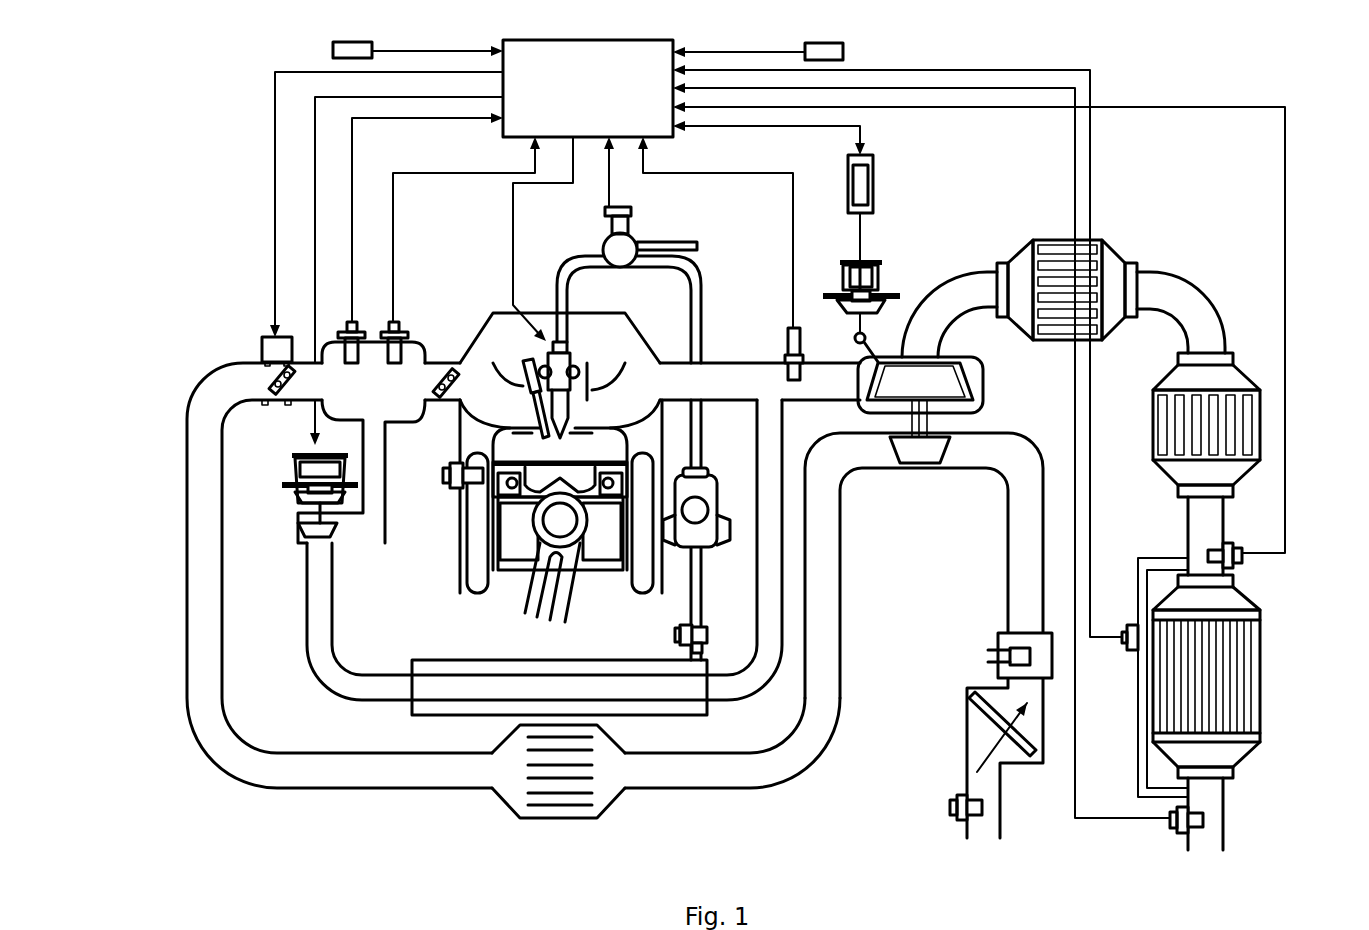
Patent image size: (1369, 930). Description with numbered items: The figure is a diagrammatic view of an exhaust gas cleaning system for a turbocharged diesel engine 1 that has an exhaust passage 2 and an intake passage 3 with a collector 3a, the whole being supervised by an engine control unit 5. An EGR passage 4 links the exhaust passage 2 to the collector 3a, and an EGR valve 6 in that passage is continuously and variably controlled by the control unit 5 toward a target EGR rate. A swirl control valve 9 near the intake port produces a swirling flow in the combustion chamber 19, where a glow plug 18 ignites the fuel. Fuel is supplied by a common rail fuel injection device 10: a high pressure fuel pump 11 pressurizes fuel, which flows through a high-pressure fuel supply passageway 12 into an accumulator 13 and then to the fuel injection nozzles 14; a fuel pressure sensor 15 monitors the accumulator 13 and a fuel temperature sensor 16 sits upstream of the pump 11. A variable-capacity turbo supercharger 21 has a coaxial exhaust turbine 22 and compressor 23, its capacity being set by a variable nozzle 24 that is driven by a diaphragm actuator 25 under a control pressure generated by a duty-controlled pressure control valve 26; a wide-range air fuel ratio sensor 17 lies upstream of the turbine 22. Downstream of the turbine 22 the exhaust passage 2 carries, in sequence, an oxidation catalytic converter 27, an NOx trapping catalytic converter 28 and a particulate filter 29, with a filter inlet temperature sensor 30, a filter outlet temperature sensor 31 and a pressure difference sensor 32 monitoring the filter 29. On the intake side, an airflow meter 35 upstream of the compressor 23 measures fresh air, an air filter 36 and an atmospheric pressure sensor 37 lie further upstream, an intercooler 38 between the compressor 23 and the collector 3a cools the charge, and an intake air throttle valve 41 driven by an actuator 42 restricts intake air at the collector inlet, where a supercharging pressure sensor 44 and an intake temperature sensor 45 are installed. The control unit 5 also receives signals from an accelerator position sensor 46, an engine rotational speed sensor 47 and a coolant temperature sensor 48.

The engine 1 is at (513, 467).
The exhaust passage 2 is at (722, 364).
The intake passage 3 is at (190, 582).
The collector 3a is at (328, 332).
The EGR passage 4 is at (328, 678).
The engine control unit 5 is at (675, 135).
The EGR valve 6 is at (300, 533).
The swirl control valve 9 is at (427, 406).
The common rail fuel injection device 10 is at (590, 249).
The high pressure fuel pump 11 is at (722, 490).
The high-pressure fuel supply passageway 12 is at (700, 278).
The accumulator 13 is at (627, 262).
The fuel injection nozzle 14 is at (572, 356).
The fuel pressure sensor 15 is at (632, 212).
The fuel temperature sensor 16 is at (675, 635).
The air fuel ratio sensor 17 is at (788, 330).
The glow plug 18 is at (527, 358).
The combustion chamber 19 is at (617, 449).
The variable-capacity turbo supercharger 21 is at (938, 505).
The exhaust turbine 22 is at (955, 366).
The compressor 23 is at (940, 462).
The variable nozzle 24 is at (870, 372).
The diaphragm actuator 25 is at (868, 268).
The pressure control valve 26 is at (873, 182).
The oxidation catalytic converter 27 is at (1050, 240).
The NOx trapping catalytic converter 28 is at (1153, 417).
The particulate filter 29 is at (1262, 675).
The filter inlet temperature sensor 30 is at (1242, 558).
The filter outlet temperature sensor 31 is at (1173, 835).
The pressure difference sensor 32 is at (1127, 650).
The airflow meter 35 is at (998, 647).
The air filter 36 is at (972, 726).
The atmospheric pressure sensor 37 is at (950, 808).
The intercooler 38 is at (606, 800).
The intake air throttle valve 41 is at (268, 380).
The actuator 42 is at (266, 336).
The supercharging pressure sensor 44 is at (358, 322).
The intake temperature sensor 45 is at (398, 322).
The accelerator position sensor 46 is at (333, 50).
The engine rotational speed sensor 47 is at (843, 50).
The temperature sensor 48 is at (445, 490).